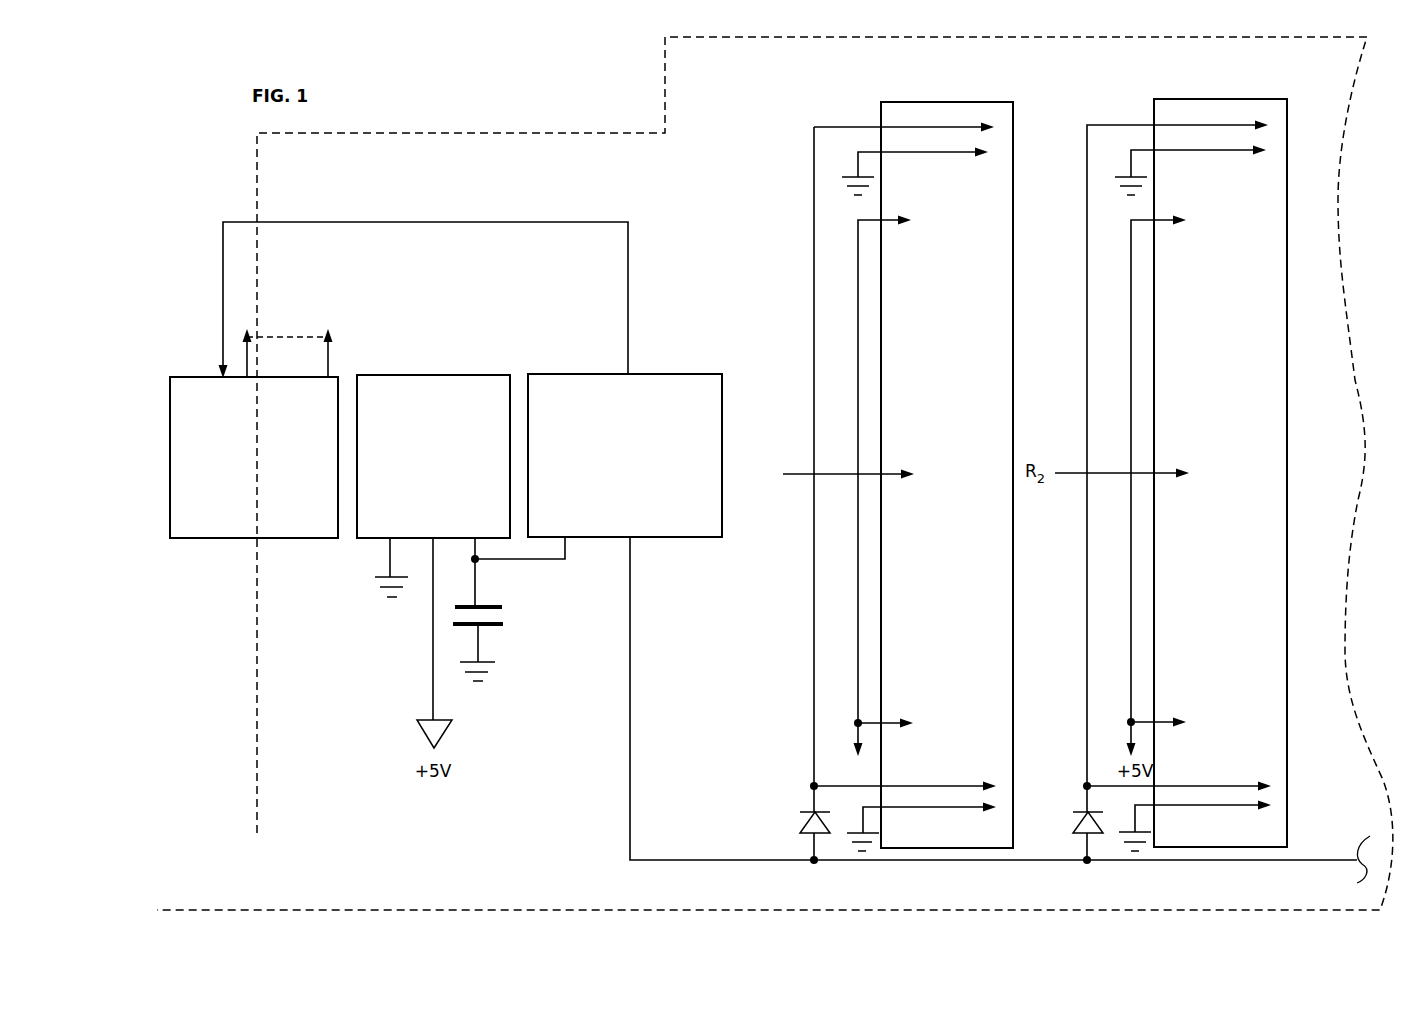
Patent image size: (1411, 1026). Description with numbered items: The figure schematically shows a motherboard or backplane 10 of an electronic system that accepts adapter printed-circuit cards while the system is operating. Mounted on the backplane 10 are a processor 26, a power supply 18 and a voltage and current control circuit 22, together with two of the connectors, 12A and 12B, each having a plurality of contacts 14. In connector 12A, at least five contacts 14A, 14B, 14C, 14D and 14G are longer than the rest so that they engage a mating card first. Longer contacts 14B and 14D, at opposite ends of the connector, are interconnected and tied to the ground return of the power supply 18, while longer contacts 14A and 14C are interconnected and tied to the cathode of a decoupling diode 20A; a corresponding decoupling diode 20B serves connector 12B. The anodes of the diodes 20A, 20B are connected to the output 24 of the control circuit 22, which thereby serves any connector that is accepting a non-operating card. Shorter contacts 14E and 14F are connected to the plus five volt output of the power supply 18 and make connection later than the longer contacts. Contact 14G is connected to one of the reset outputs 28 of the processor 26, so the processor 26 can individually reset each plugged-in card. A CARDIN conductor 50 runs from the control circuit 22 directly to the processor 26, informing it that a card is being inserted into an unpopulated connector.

The backplane 10 is at (567, 142).
The CARDIN conductor 50 is at (440, 222).
The processor 26 is at (228, 540).
The reset outputs 28 is at (380, 322).
The power supply 18 is at (447, 375).
The voltage and current control circuit 22 is at (677, 373).
The output of the voltage and current control circuit 24 is at (630, 723).
The contacts 14 is at (940, 99).
The connector 12A is at (970, 102).
The connector 12B is at (1258, 99).
The longer contact 14A is at (915, 125).
The longer contact 14B is at (953, 152).
The longer contact 14C is at (960, 785).
The longer contact 14D is at (950, 810).
The shorter contact 14E is at (875, 220).
The shorter contact 14F is at (888, 722).
The longer contact 14G is at (897, 470).
The decoupling diode 20A is at (803, 825).
The decoupling diode 20B is at (1075, 825).